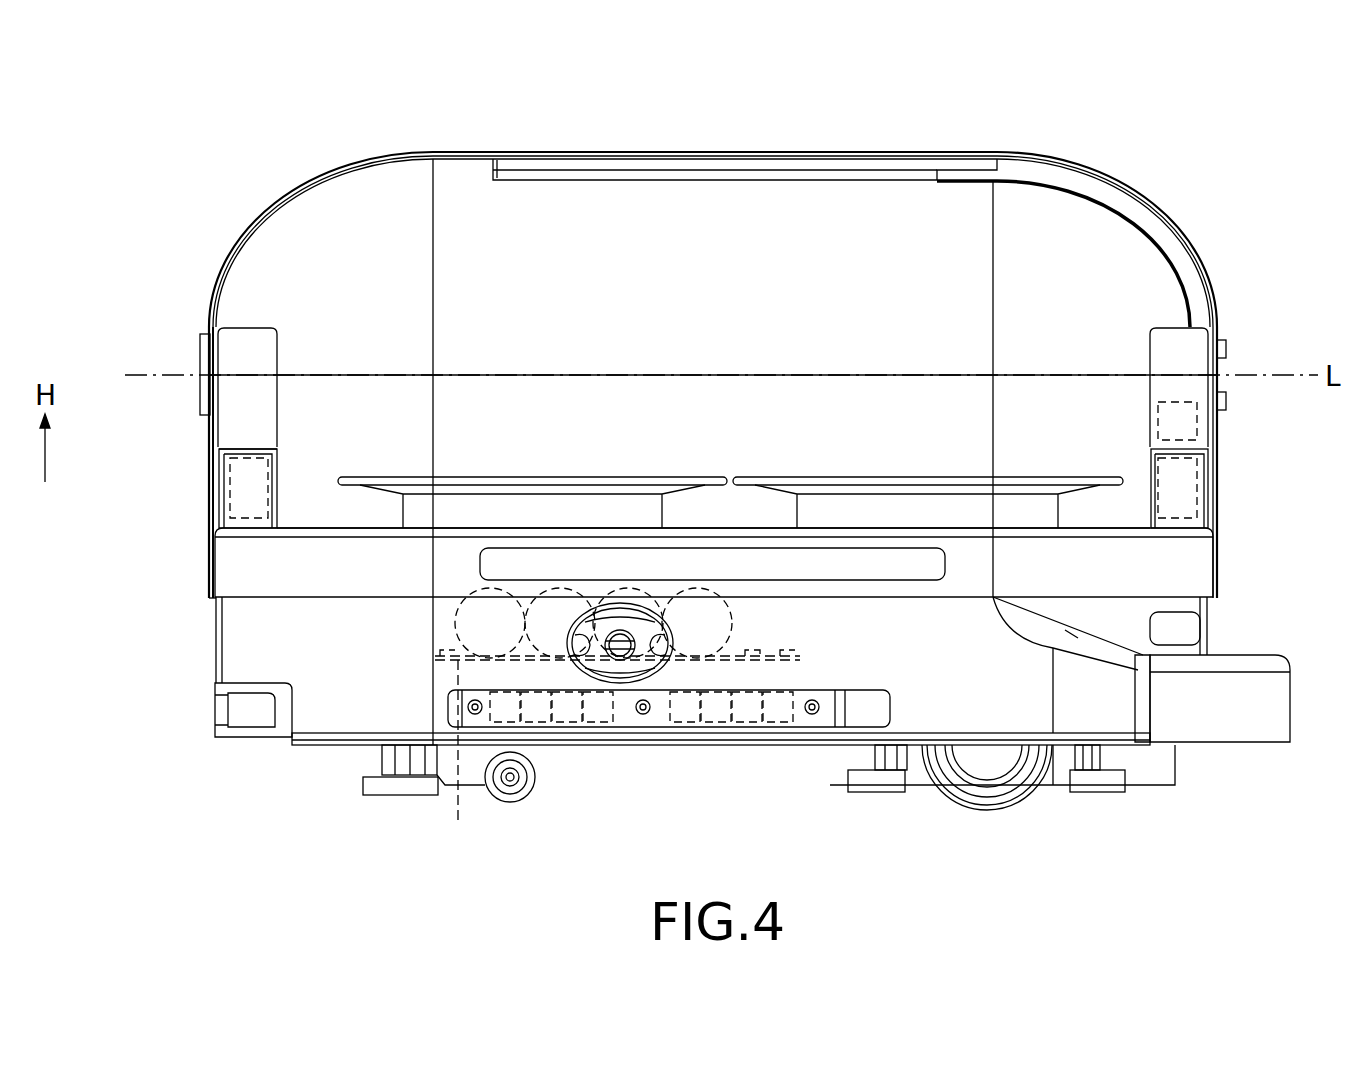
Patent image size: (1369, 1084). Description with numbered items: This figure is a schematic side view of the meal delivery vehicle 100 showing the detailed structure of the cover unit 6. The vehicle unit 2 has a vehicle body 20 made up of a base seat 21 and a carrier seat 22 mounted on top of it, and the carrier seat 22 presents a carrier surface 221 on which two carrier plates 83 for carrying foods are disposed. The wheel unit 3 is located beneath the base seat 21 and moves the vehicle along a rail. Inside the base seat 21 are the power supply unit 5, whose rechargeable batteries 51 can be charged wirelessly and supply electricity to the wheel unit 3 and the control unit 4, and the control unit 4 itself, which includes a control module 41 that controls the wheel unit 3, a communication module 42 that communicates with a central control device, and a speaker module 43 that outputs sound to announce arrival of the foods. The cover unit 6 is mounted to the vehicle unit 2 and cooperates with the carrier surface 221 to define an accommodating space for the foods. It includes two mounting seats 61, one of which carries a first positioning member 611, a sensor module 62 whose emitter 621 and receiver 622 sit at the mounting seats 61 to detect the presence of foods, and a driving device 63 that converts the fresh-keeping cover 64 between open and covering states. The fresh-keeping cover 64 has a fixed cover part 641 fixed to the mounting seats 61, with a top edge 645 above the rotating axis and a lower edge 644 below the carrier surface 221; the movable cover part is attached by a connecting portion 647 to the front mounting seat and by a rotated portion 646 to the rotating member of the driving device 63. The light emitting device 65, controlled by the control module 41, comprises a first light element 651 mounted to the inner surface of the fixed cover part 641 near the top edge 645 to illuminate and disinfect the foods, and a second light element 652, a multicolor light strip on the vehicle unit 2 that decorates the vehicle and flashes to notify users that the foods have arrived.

The meal delivery vehicle 100 is at (1131, 150).
The cover unit 6 is at (733, 439).
The fresh-keeping cover 64 is at (1190, 232).
The fixed cover part 641 is at (745, 137).
The top edge 645 is at (665, 152).
The light emitting device 65 is at (936, 254).
The first light element 651 is at (730, 184).
The first positioning member 611 is at (209, 338).
The mounting seats 61 is at (251, 345).
The connecting portion 647 is at (205, 376).
The rotated portion 646 is at (1218, 378).
The driving device 63 is at (1197, 431).
The sensor module 62 is at (1260, 488).
The emitter 621 is at (1200, 470).
The receiver 622 is at (250, 483).
The carrier seat 22 is at (1155, 566).
The carrier surface 221 is at (318, 526).
The carrier plates 83 is at (562, 477).
The vehicle unit 2 is at (675, 671).
The vehicle body 20 is at (205, 652).
The base seat 21 is at (318, 706).
The lower edge 644 is at (210, 597).
The power supply unit 5 is at (587, 603).
The rechargeable batteries 51 is at (478, 596).
The control unit 4 is at (812, 658).
The speaker module 43 is at (782, 648).
The control module 41 is at (449, 759).
The communication module 42 is at (449, 759).
The second light element 652 is at (730, 707).
The wheel unit 3 is at (1028, 820).